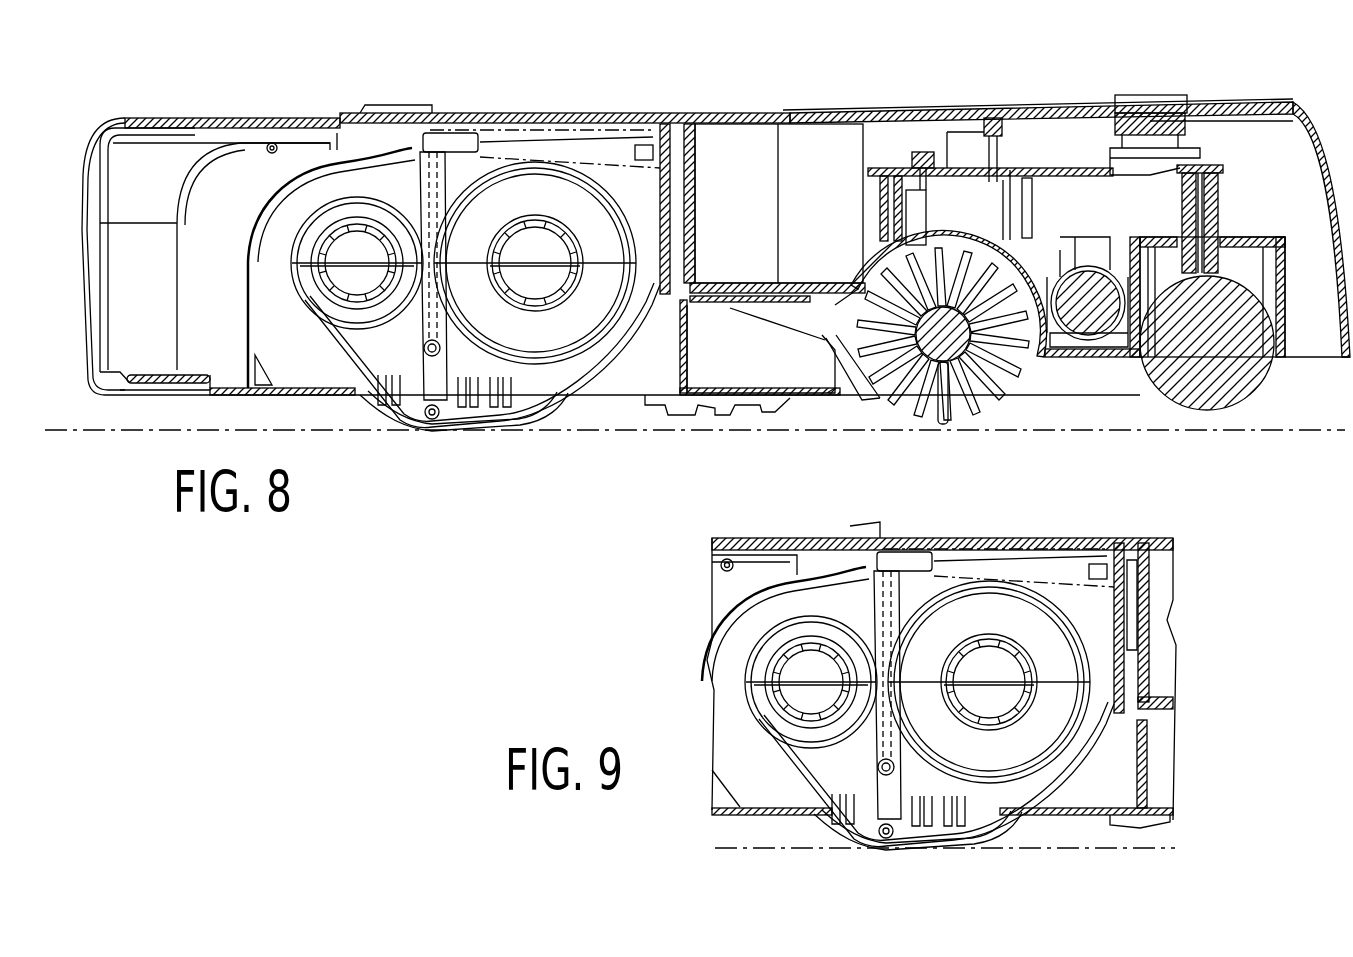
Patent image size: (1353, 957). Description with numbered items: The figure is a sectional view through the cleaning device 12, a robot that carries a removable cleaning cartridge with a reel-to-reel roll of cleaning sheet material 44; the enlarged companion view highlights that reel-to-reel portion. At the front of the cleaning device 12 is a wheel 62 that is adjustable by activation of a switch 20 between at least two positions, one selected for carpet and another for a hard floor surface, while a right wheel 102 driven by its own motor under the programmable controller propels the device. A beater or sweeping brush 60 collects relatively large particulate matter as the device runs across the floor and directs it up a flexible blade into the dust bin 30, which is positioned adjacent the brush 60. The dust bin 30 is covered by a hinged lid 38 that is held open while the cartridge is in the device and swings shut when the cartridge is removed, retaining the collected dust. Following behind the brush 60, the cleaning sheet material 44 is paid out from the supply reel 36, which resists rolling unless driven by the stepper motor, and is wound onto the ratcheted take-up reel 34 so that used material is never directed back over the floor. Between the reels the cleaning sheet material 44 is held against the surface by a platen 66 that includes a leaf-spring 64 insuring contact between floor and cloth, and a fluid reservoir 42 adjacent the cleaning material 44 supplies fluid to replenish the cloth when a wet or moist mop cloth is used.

In FIG. 8, the cleaning device 12 is at (1262, 100).
In FIG. 8, the switch 20 is at (1140, 95).
In FIG. 8, the dust bin 30 is at (722, 375).
In FIG. 8, the take-up reel 34 is at (352, 200).
In FIG. 9, the take-up reel 34 is at (778, 700).
In FIG. 8, the supply reel 36 is at (588, 178).
In FIG. 9, the supply reel 36 is at (1065, 655).
In FIG. 8, the hinged lid 38 is at (806, 293).
In FIG. 8, the fluid reservoir 42 is at (232, 168).
In FIG. 8, the cleaning sheet material 44 is at (462, 425).
In FIG. 9, the cleaning sheet material 44 is at (880, 834).
In FIG. 8, the sweeper brush 60 is at (950, 422).
In FIG. 8, the wheel 62 is at (1275, 388).
In FIG. 8, the leaf-spring 64 is at (510, 418).
In FIG. 9, the leaf-spring 64 is at (925, 840).
In FIG. 8, the platen 66 is at (432, 422).
In FIG. 9, the platen 66 is at (888, 842).
In FIG. 8, the right wheel 102 is at (690, 408).